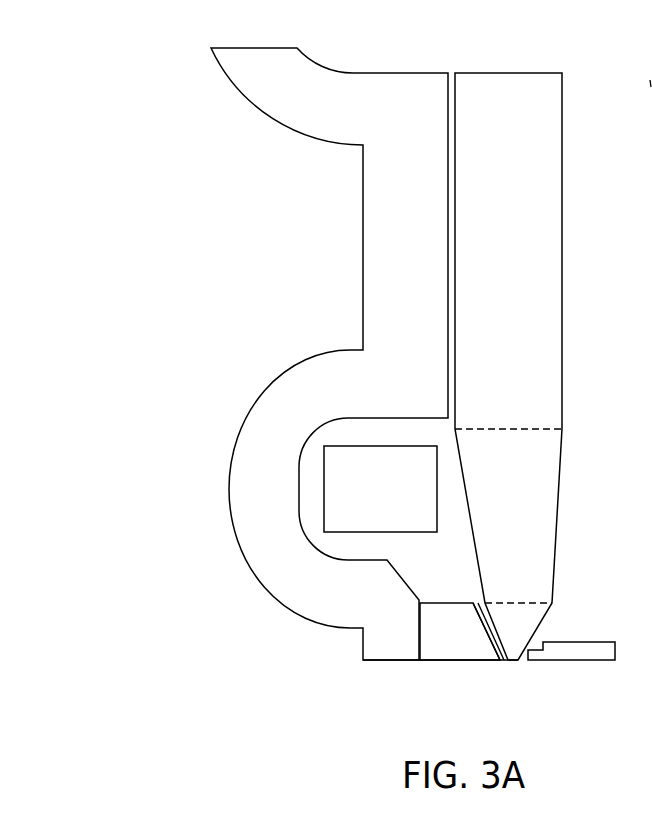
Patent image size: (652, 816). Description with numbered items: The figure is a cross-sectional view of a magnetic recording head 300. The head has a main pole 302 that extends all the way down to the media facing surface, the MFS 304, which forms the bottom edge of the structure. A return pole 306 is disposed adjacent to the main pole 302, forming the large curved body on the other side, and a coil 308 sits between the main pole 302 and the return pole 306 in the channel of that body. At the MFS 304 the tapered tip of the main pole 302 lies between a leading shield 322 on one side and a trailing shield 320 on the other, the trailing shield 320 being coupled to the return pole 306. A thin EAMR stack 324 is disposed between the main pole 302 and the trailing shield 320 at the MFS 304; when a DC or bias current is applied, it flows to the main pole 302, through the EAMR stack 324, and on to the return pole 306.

The magnetic recording head 300 is at (158, 128).
The main pole 302 is at (539, 576).
The MFS 304 is at (437, 677).
The return pole 306 is at (371, 606).
The coil 308 is at (401, 497).
The trailing shield 320 is at (471, 646).
The leading shield 322 is at (592, 650).
The EAMR stack 324 is at (507, 661).